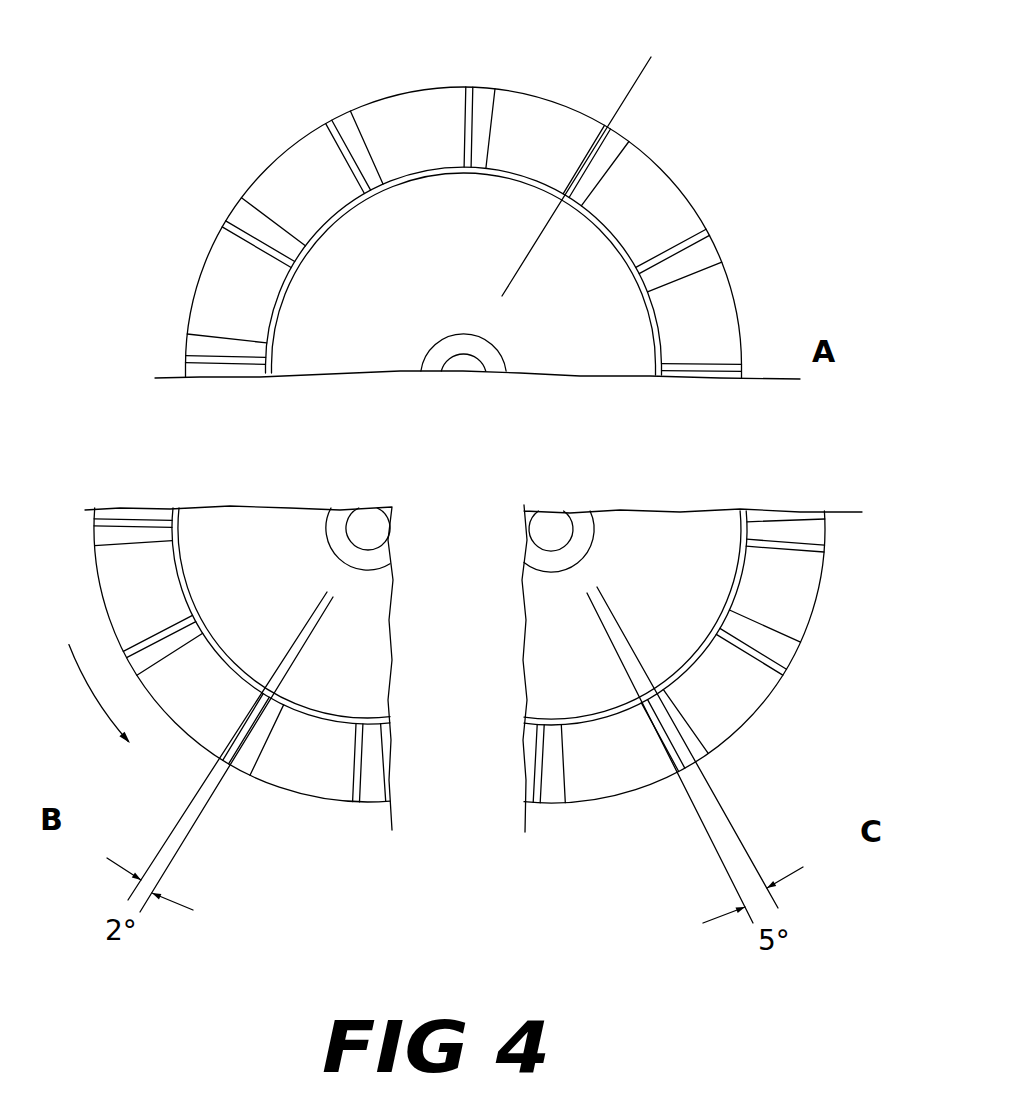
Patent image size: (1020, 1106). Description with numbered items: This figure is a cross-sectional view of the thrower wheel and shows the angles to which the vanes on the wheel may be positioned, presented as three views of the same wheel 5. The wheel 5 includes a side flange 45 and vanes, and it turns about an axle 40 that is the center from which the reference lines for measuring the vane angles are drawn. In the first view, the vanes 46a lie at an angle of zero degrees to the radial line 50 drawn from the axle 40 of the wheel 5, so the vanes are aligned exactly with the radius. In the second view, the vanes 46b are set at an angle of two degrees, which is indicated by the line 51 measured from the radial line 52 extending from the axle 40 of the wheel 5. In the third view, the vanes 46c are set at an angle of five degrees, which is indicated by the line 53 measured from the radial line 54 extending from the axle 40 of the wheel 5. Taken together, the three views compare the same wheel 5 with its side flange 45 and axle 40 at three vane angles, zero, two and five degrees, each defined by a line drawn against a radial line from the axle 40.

The wheel 5 is at (582, 252).
The axle 40 is at (549, 530).
The side flange 45 is at (540, 114).
The vanes 46a is at (602, 148).
The vanes 46b is at (243, 733).
The vanes 46c is at (768, 658).
The radial line 50 is at (634, 87).
The line 51 is at (190, 807).
The radial line 52 is at (188, 835).
The line 53 is at (708, 838).
The radial line 54 is at (715, 803).